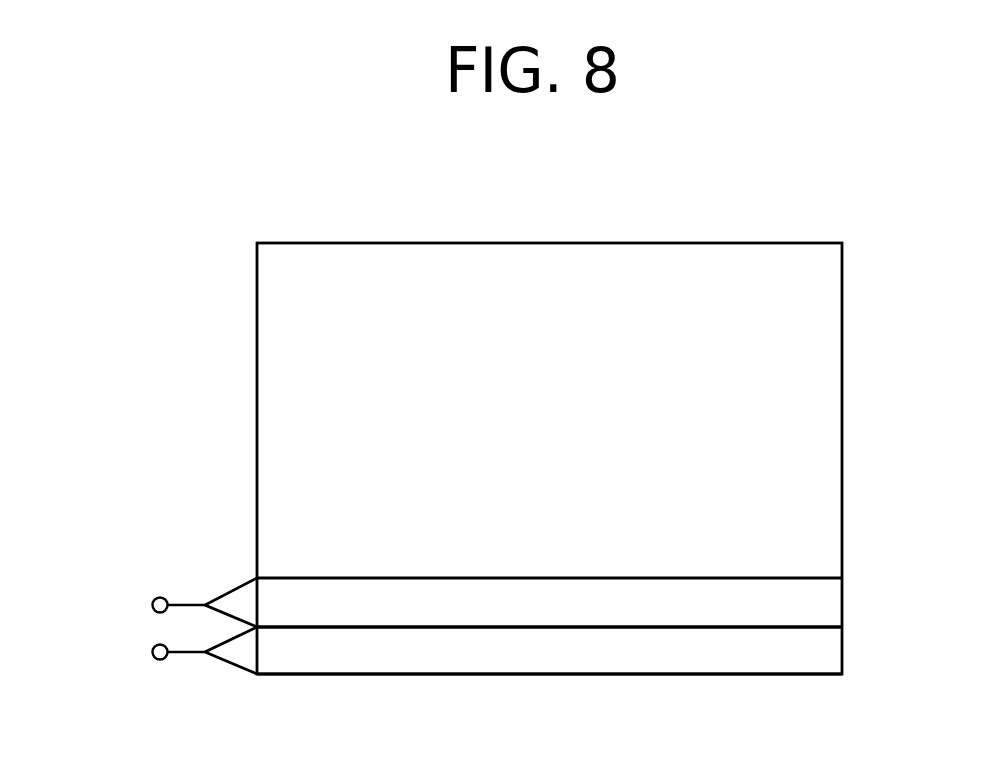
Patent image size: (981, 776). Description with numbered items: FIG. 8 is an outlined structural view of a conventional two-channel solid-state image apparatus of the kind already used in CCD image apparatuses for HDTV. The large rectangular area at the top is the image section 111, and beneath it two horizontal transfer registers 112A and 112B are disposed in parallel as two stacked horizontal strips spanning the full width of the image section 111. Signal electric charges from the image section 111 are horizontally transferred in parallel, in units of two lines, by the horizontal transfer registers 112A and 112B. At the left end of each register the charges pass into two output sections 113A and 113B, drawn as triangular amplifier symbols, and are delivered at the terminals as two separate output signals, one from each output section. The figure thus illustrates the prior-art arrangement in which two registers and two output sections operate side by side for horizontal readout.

The image section 111 is at (725, 238).
The horizontal transfer register 112A is at (478, 607).
The horizontal transfer register 112B is at (703, 657).
The output section 113A is at (235, 600).
The output section 113B is at (238, 658).